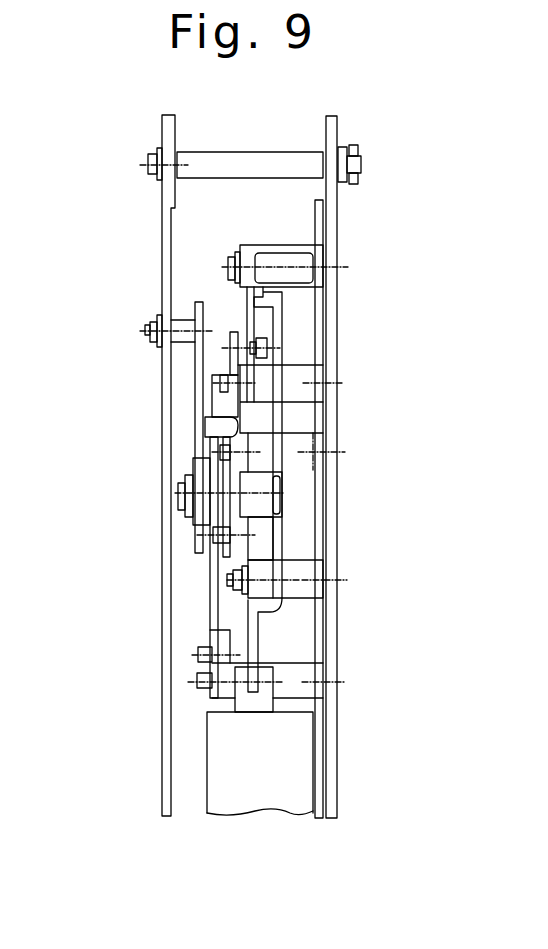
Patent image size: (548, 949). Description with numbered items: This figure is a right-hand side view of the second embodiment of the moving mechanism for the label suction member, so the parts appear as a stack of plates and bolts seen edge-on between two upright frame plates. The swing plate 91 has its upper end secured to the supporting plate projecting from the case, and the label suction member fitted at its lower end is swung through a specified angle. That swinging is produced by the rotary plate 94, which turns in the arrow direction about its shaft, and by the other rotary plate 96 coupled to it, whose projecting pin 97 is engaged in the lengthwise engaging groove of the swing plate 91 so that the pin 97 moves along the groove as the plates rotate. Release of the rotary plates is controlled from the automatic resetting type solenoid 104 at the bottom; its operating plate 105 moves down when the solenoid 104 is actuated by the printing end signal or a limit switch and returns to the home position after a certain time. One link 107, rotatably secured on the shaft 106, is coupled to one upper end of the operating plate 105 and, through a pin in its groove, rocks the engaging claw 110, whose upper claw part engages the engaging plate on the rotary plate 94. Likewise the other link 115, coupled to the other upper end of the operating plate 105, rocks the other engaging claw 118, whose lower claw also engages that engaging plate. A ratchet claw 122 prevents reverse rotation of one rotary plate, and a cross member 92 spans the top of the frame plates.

The swing plate 91 is at (162, 440).
The tie rod 92 is at (238, 160).
The rotary plate 94 is at (213, 565).
The other rotary plate 96 is at (195, 370).
The pin 97 is at (147, 325).
The automatic resetting type solenoid 104 is at (293, 767).
The operating plate 105 is at (277, 542).
The shaft 106 is at (227, 586).
The link 107 is at (243, 571).
The engaging claw 110 is at (283, 487).
The other link 115 is at (245, 315).
The other engaging claw 118 is at (238, 396).
The ratchet claw 122 is at (207, 631).